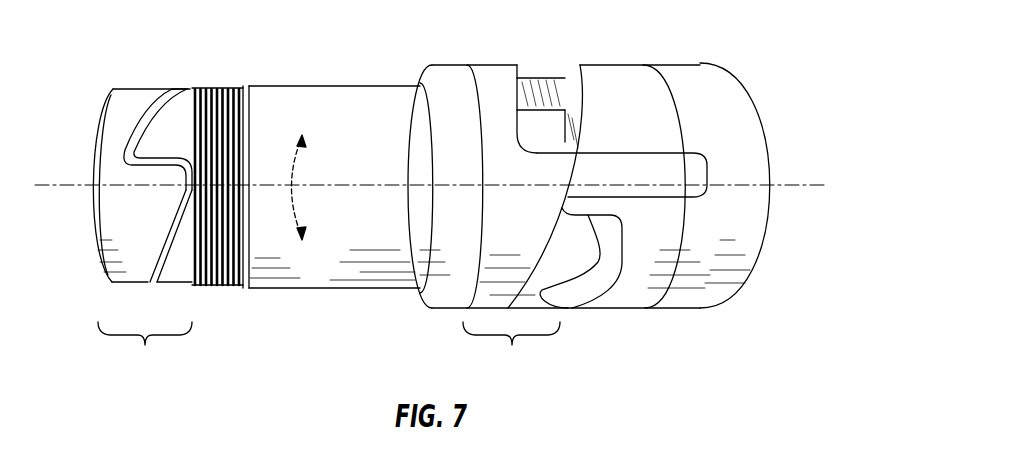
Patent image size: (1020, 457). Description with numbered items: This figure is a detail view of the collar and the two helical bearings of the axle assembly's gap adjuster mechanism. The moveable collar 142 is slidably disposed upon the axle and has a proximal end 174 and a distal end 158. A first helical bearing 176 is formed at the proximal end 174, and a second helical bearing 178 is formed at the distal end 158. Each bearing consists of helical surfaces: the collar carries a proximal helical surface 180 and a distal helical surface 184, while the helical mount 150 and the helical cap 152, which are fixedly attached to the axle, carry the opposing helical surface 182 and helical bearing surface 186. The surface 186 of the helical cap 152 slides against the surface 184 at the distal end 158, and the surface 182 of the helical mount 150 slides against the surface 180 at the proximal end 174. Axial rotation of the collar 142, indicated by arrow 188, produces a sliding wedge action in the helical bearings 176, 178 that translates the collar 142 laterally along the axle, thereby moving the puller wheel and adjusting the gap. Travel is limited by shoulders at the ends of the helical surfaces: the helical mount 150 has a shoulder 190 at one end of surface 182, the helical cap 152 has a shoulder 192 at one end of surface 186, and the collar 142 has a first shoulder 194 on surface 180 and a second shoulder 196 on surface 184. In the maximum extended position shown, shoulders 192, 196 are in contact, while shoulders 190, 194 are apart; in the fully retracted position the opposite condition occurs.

The moveable collar 142 is at (360, 102).
The helical mount 150 is at (663, 137).
The helical cap 152 is at (110, 173).
The distal end 158 is at (176, 287).
The proximal end 174 is at (525, 66).
The first helical bearing 176 is at (554, 220).
The second helical bearing 178 is at (156, 76).
The proximal helical surface 180 is at (560, 232).
The helical surface of the helical mount 182 is at (585, 112).
The distal helical surface 184 is at (181, 92).
The helical bearing surface of the helical cap 186 is at (137, 117).
The arrow 188 is at (290, 197).
The shoulder of the helical mount 190 is at (595, 217).
The shoulder of the helical cap 192 is at (152, 172).
The first shoulder 194 is at (550, 150).
The second shoulder 196 is at (145, 158).